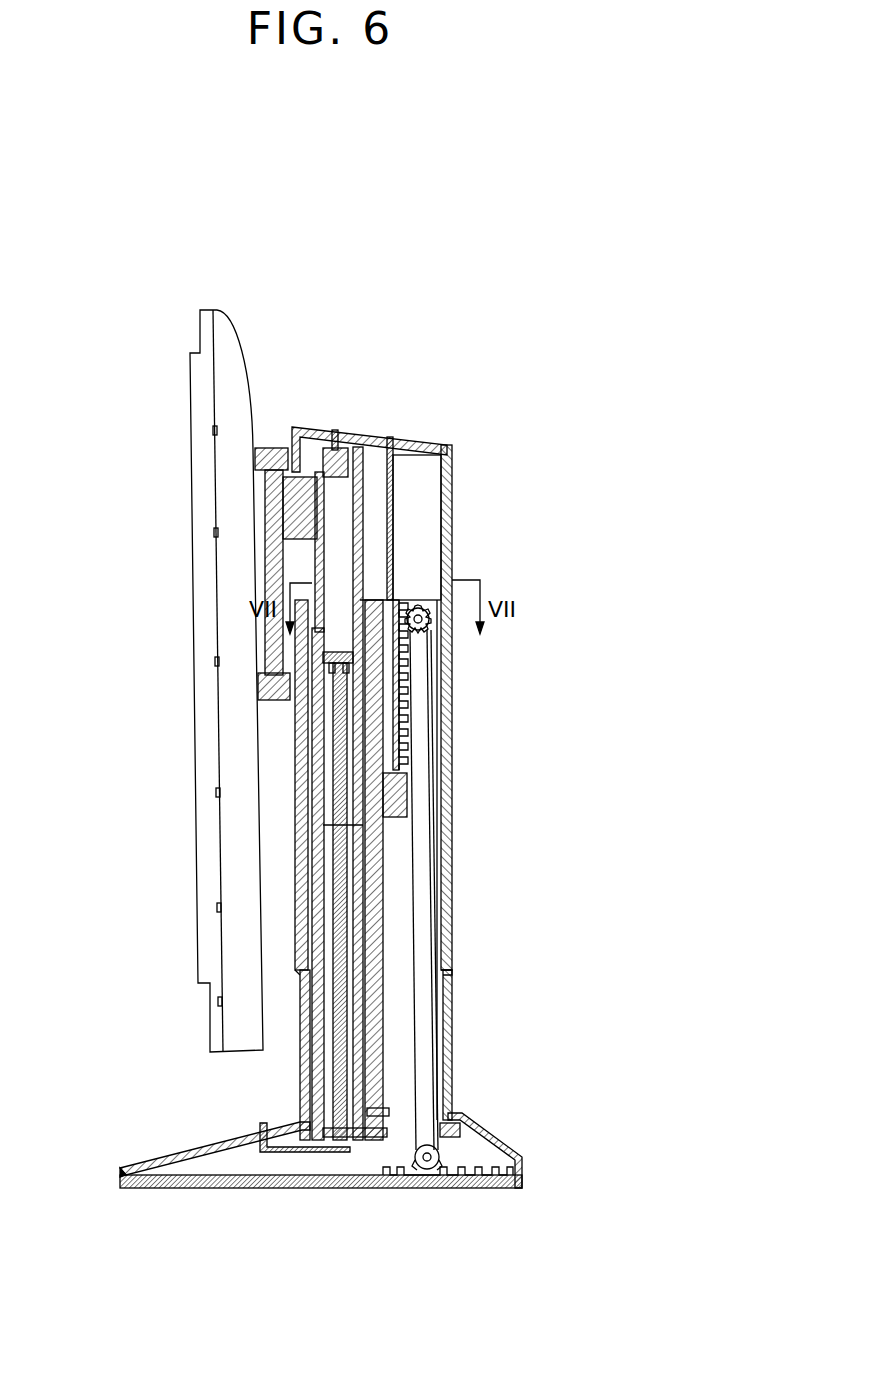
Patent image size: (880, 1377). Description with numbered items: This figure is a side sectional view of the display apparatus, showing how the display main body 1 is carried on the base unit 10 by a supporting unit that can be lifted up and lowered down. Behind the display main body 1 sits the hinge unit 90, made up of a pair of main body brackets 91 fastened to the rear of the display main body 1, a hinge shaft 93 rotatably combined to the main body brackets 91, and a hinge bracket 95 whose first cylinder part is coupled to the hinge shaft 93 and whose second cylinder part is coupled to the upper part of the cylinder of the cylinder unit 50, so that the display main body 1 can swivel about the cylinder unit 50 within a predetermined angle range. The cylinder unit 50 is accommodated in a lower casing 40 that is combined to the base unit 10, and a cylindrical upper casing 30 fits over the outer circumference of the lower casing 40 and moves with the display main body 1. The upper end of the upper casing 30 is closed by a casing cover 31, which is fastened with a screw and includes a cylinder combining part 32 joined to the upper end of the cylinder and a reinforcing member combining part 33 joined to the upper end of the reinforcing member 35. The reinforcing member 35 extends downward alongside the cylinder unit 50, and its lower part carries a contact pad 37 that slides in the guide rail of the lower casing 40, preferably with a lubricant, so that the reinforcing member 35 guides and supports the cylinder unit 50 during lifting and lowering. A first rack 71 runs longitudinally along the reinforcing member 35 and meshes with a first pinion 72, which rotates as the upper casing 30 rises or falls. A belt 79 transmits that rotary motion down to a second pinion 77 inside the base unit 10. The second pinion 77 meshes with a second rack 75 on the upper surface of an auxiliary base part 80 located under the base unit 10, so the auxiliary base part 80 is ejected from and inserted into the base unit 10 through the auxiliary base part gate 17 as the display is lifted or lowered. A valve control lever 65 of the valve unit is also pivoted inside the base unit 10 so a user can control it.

The display main body 1 is at (185, 510).
The base unit 10 is at (160, 1140).
The auxiliary base part gate 17 is at (120, 1177).
The upper casing 30 is at (453, 907).
The casing cover 31 is at (435, 345).
The cylinder combining part 32 is at (370, 433).
The reinforcing member combining part 33 is at (427, 445).
The reinforcing member 35 is at (400, 528).
The contact pad 37 is at (403, 782).
The lower casing 40 is at (452, 1052).
The cylinder unit 50 is at (377, 837).
The valve control lever 65 is at (305, 1152).
The first rack 71 is at (415, 727).
The first pinion 72 is at (440, 632).
The second rack 75 is at (463, 1188).
The second pinion 77 is at (427, 1170).
The belt 79 is at (449, 980).
The auxiliary base part 80 is at (185, 1190).
The hinge unit 90 is at (268, 345).
The main body brackets 91 is at (258, 448).
The hinge shaft 93 is at (282, 450).
The hinge bracket 95 is at (323, 437).